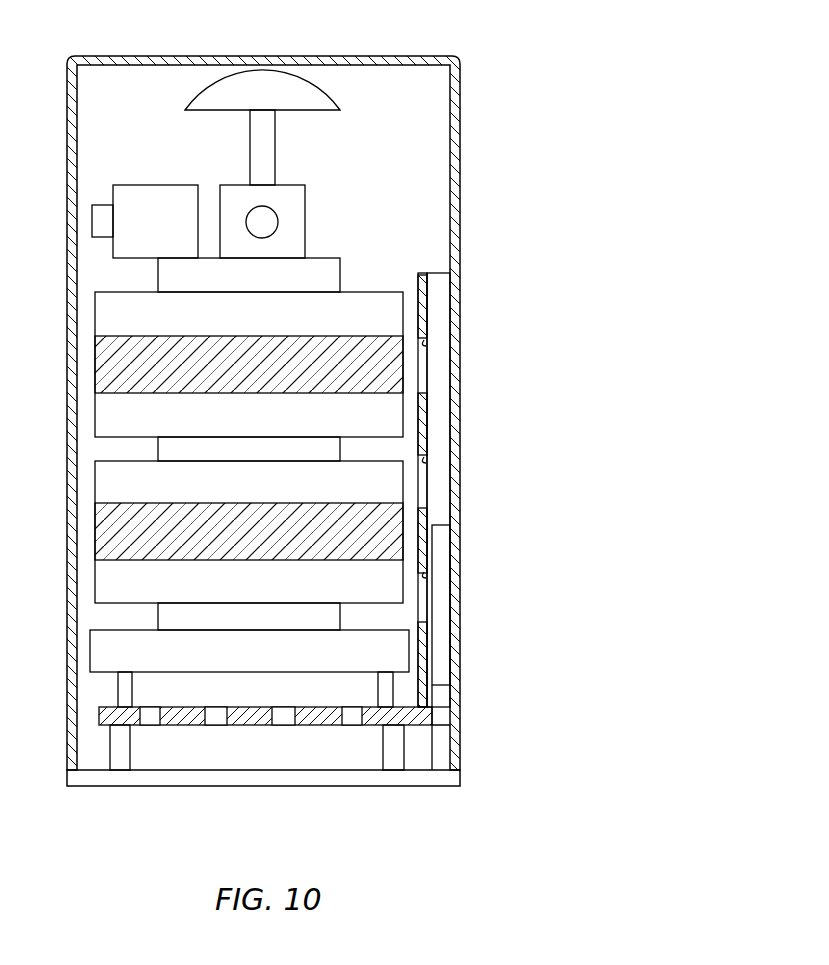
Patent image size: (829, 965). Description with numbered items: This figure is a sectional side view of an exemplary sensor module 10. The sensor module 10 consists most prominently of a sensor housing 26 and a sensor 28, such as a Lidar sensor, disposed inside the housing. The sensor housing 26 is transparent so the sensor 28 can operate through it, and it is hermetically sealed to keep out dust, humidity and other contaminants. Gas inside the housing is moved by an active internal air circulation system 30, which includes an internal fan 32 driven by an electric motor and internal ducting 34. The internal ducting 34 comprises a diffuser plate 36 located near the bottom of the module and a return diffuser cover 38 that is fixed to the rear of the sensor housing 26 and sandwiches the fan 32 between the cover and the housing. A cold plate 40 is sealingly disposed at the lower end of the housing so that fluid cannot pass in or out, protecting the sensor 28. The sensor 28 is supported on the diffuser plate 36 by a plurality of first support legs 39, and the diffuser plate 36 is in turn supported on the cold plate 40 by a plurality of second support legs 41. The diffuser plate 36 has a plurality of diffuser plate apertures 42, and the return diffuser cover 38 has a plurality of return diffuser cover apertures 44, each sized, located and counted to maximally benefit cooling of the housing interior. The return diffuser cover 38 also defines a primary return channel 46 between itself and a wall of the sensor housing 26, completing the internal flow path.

The sensor module 10 is at (462, 42).
The sensor housing 26 is at (461, 140).
The sensor 28 is at (306, 205).
The internal air circulation system 30 is at (415, 283).
The internal fan 32 is at (433, 525).
The internal ducting 34 is at (412, 690).
The diffuser plate 36 is at (230, 718).
The return diffuser cover 38 is at (426, 415).
The first support legs 39 is at (133, 696).
The cold plate 40 is at (420, 787).
The second support legs 41 is at (131, 750).
The diffuser plate apertures 42 is at (348, 722).
The return diffuser cover apertures 44 is at (426, 346).
The primary return channel 46 is at (436, 272).